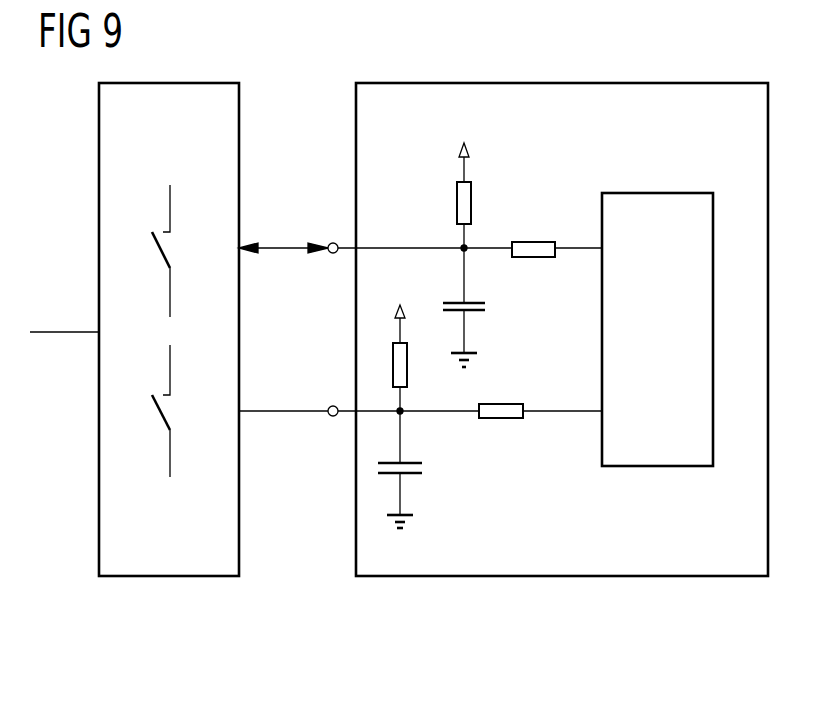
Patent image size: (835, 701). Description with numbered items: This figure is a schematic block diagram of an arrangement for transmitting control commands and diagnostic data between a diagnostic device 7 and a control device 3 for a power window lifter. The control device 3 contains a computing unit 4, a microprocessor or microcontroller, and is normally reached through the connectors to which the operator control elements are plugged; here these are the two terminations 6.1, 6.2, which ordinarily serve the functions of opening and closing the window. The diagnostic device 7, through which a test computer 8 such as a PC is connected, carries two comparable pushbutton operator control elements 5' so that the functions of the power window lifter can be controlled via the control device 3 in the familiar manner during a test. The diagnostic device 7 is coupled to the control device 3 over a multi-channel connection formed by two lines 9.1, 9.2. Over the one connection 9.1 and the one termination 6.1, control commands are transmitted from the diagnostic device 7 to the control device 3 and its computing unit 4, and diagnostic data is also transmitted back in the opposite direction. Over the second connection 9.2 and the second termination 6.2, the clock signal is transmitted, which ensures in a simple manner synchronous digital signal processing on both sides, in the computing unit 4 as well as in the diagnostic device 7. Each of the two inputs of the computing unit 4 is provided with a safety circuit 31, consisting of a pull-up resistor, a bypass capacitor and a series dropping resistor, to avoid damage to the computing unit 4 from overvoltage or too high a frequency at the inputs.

The control device 3 is at (562, 578).
The computing unit 4 is at (657, 193).
The pushbutton operator control element 5' is at (142, 331).
The termination 6.1 is at (331, 243).
The termination 6.2 is at (331, 406).
The diagnostic device 7 is at (169, 578).
The test computer 8 is at (65, 330).
The connection 9.1 is at (280, 252).
The connection 9.2 is at (275, 414).
The safety circuit 31 is at (505, 212).